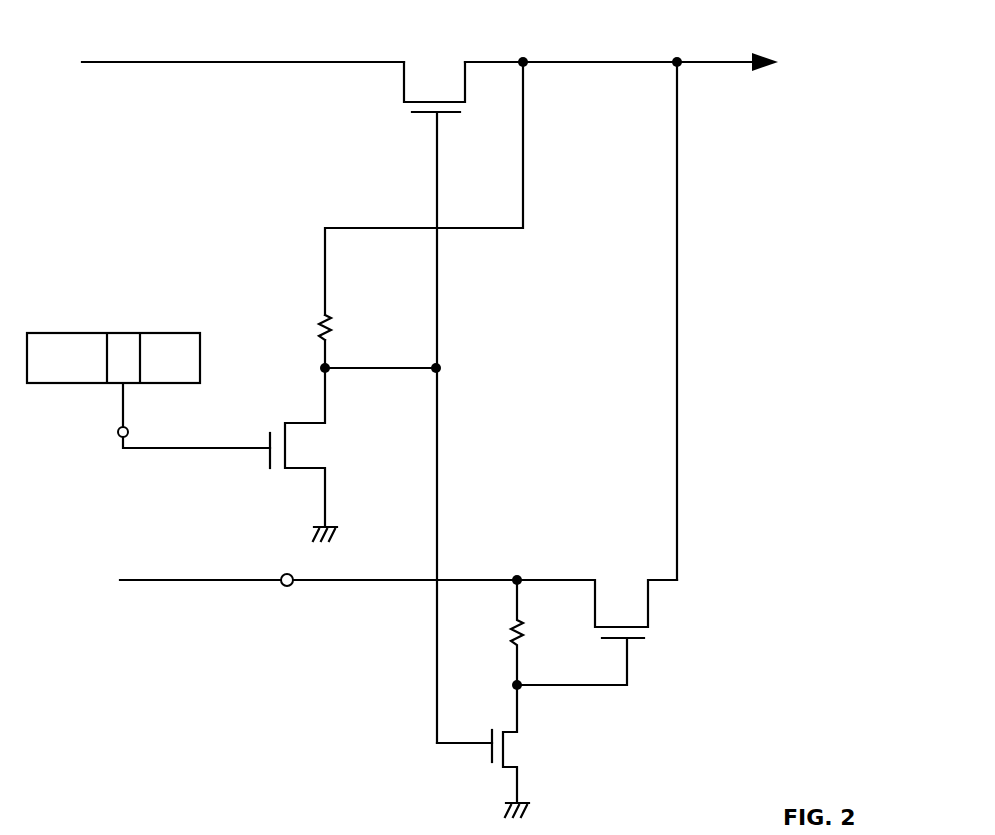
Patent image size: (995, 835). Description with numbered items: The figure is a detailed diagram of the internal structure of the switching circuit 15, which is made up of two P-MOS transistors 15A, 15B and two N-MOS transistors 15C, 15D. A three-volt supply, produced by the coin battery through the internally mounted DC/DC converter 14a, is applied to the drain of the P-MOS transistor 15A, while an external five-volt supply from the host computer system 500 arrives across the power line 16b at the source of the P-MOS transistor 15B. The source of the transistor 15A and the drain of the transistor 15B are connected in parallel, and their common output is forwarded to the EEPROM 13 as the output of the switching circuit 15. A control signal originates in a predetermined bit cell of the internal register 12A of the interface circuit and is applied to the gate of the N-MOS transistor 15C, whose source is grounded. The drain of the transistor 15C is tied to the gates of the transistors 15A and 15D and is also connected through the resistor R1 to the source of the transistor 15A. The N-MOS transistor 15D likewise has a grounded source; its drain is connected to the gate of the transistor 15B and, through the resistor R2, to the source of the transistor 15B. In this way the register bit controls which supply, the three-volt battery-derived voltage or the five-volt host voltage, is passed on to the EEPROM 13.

The DC/DC converter 14a is at (228, 67).
The P-MOS transistor 15A is at (432, 70).
The EEPROM 13 is at (730, 58).
The resistor R1 is at (359, 344).
The internal register 12A is at (150, 322).
The N-MOS transistor 15C is at (287, 400).
The host computer system 500 is at (286, 583).
The power line 16b is at (283, 574).
The switching circuit 15 is at (608, 668).
The P-MOS transistor 15B is at (616, 574).
The resistor R2 is at (496, 635).
The N-MOS transistor 15D is at (540, 744).